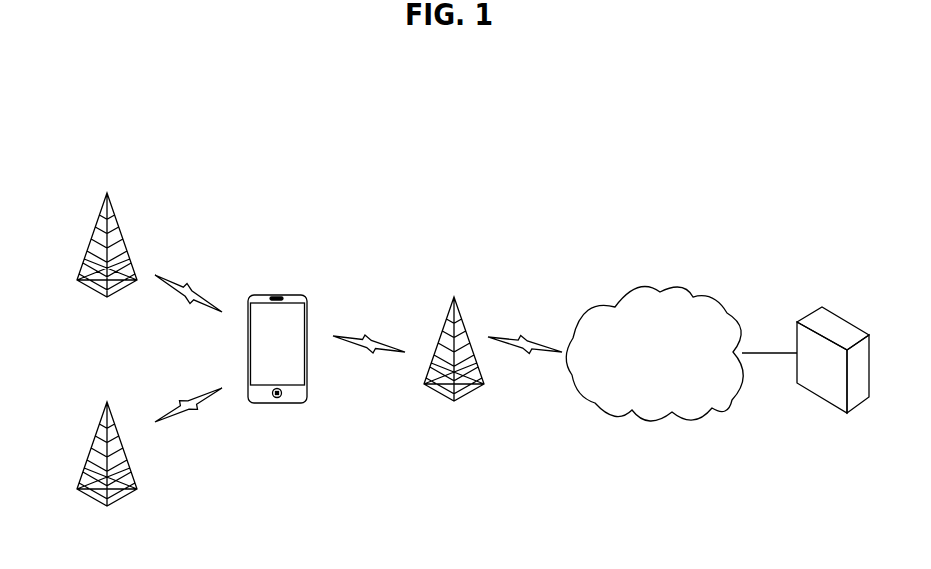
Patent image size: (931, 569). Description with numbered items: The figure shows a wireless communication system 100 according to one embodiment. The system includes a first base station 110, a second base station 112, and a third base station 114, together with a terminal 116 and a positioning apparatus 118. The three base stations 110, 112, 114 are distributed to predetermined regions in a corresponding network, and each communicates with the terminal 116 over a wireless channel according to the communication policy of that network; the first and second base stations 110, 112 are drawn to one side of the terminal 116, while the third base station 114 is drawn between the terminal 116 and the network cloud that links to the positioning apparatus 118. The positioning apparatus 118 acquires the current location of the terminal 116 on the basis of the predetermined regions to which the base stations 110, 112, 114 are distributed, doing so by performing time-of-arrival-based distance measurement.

The wireless communication system 100 is at (400, 180).
The first base station 110 is at (97, 221).
The second base station 112 is at (97, 430).
The third base station 114 is at (437, 390).
The terminal 116 is at (288, 295).
The positioning apparatus 118 is at (830, 312).